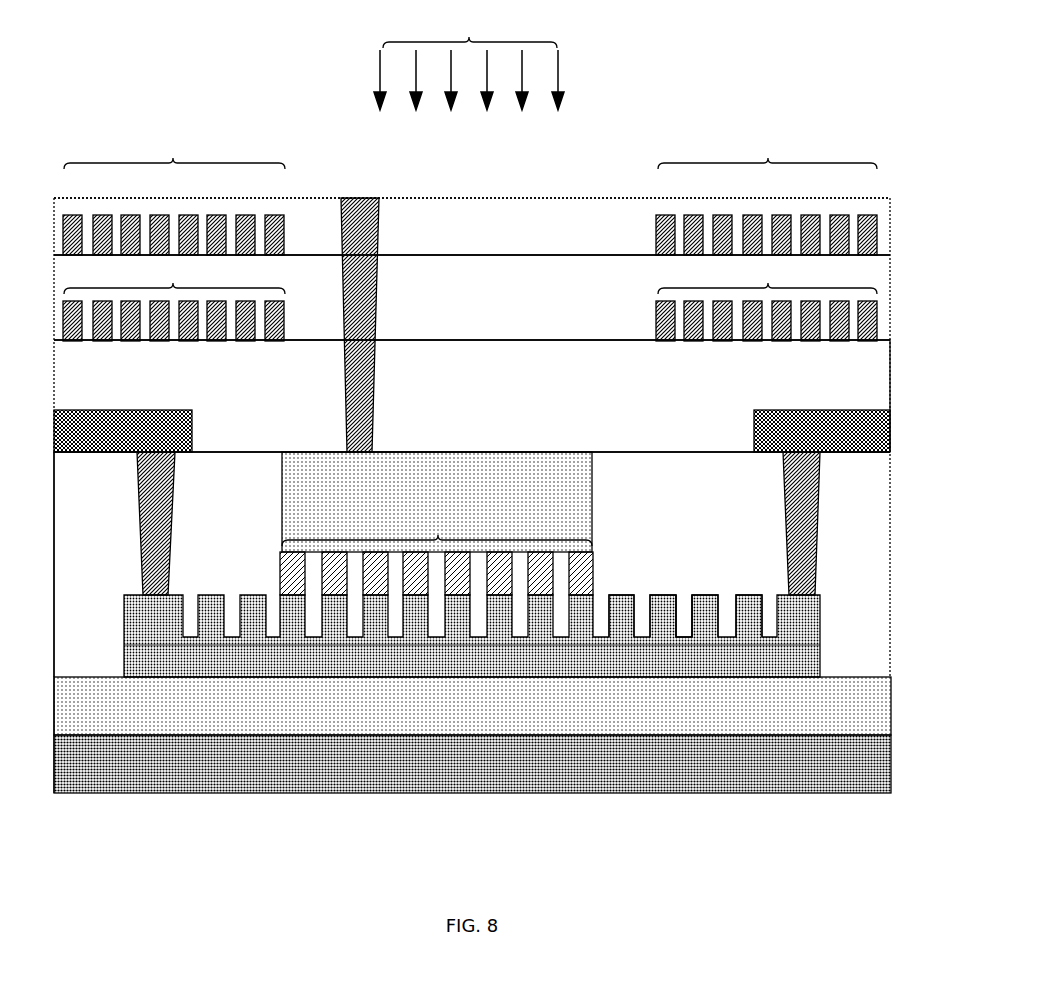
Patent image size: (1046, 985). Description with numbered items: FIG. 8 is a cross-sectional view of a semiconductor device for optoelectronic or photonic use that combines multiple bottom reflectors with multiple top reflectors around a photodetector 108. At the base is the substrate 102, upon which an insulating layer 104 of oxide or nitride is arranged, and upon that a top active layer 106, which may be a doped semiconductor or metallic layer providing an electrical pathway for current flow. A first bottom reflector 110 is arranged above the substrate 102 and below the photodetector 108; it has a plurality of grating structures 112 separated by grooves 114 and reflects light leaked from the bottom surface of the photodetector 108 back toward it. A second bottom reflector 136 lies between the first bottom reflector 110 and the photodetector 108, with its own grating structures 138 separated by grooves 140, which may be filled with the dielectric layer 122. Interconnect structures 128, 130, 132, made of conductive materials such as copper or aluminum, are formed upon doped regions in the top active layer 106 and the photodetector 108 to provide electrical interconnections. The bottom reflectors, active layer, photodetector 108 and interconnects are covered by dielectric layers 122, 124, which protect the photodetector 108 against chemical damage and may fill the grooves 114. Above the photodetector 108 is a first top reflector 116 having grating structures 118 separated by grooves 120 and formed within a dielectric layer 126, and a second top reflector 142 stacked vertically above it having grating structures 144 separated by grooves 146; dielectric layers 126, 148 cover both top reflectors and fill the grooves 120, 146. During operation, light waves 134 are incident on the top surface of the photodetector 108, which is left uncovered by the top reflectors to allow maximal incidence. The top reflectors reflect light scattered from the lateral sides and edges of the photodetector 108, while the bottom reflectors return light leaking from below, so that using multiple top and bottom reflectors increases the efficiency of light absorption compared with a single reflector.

The substrate 102 is at (878, 766).
The insulating layer 104 is at (875, 701).
The top active layer 106 is at (800, 656).
The photodetector 108 is at (523, 458).
The first bottom reflector 110 is at (472, 662).
The grating structures 112 is at (622, 612).
The grooves 114 is at (684, 615).
The first top reflector 116 is at (470, 325).
The grating structures 118 is at (192, 338).
The grooves 120 is at (258, 333).
The dielectric layer 122 is at (873, 569).
The dielectric layer 124 is at (870, 384).
The dielectric layer 126 is at (510, 293).
The interconnect structure 128 is at (187, 426).
The interconnect structure 130 is at (157, 478).
The interconnect structure 132 is at (372, 412).
The light waves 134 is at (469, 62).
The second bottom reflector 136 is at (437, 528).
The grating structures 138 is at (298, 582).
The grooves 140 is at (355, 568).
The second top reflector 142 is at (470, 193).
The grating structures 144 is at (157, 218).
The grooves 146 is at (230, 230).
The dielectric layer 148 is at (566, 230).